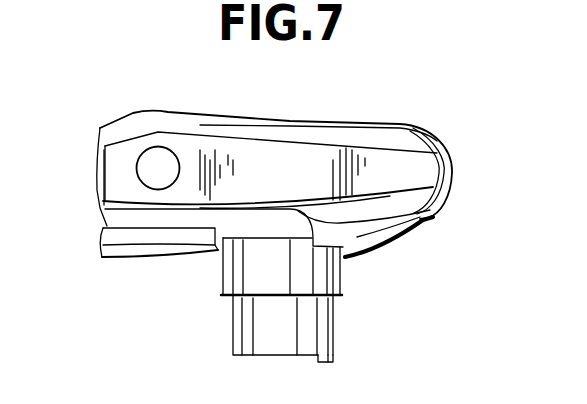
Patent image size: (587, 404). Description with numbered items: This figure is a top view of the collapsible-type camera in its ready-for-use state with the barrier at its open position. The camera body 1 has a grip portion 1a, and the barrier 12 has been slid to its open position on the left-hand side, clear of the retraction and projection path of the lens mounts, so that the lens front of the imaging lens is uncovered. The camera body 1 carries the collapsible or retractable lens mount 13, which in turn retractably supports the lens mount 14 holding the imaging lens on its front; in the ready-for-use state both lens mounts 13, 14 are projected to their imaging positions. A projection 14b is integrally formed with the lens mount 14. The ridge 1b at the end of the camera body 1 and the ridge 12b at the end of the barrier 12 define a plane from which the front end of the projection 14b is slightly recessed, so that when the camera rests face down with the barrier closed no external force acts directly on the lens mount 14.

The camera body 1 is at (385, 122).
The grip portion 1a is at (163, 114).
The ridge 1b is at (345, 257).
The barrier 12 is at (148, 257).
The ridge 12b is at (220, 265).
The lens mount 13 is at (342, 284).
The lens mount 14 is at (335, 332).
The projection 14b is at (328, 363).